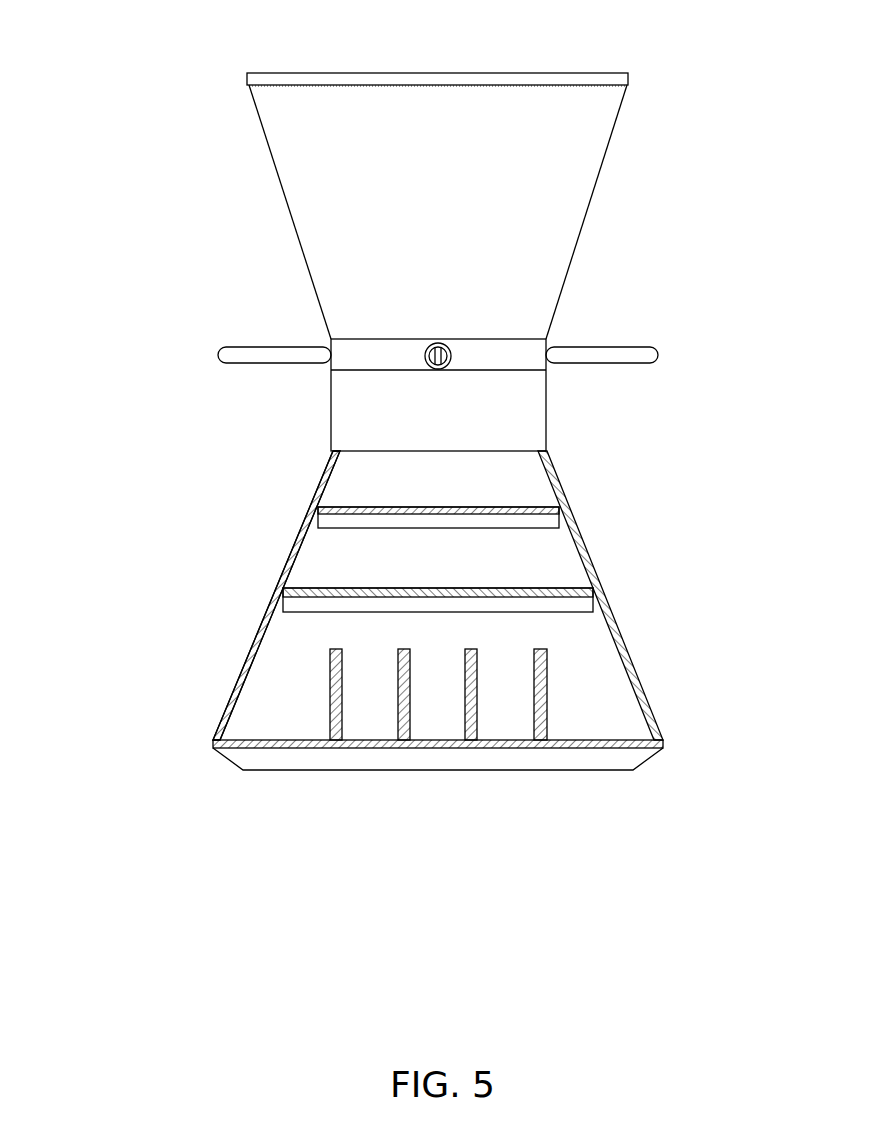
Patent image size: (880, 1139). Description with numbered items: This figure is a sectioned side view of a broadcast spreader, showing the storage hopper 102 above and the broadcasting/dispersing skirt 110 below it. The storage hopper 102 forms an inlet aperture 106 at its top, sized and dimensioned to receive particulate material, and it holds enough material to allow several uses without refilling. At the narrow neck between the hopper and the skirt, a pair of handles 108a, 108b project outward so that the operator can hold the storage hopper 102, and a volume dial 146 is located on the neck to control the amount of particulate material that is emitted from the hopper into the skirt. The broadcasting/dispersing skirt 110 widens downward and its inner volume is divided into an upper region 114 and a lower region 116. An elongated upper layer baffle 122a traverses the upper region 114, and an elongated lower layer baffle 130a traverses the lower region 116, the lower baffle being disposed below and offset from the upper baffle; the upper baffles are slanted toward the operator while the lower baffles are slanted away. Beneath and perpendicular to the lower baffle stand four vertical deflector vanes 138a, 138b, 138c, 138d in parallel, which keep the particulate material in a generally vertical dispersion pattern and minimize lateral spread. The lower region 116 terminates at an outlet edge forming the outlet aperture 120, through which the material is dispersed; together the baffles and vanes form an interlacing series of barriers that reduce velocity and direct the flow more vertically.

The storage hopper 102 is at (222, 208).
The inlet aperture 106 is at (324, 82).
The handle 108a is at (242, 350).
The handle 108b is at (636, 350).
The broadcasting/dispersing skirt 110 is at (204, 594).
The upper region 114 is at (312, 471).
The lower region 116 is at (210, 742).
The outlet aperture 120 is at (558, 772).
The upper layer baffle 122a is at (542, 505).
The lower layer baffle 130a is at (570, 605).
The vertical deflector vane 138a is at (336, 700).
The vertical deflector vane 138b is at (410, 700).
The vertical deflector vane 138c is at (470, 700).
The vertical deflector vane 138d is at (535, 700).
The volume dial 146 is at (443, 343).